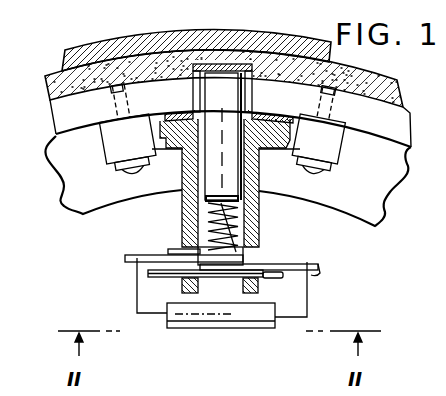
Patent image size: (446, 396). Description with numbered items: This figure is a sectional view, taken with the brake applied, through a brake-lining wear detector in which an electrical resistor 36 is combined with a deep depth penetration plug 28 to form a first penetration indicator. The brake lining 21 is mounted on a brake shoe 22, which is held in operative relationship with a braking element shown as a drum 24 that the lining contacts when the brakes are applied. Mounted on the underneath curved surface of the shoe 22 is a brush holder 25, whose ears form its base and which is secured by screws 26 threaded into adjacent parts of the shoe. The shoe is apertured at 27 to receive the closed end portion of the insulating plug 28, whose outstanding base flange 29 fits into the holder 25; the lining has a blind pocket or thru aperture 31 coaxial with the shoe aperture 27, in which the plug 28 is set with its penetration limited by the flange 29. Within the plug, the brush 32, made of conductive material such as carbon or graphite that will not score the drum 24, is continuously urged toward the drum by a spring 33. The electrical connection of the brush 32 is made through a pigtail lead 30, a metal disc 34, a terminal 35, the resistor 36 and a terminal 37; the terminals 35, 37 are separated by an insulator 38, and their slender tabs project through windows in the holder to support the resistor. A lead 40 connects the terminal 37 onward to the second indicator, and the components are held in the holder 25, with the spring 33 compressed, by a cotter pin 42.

The brake lining 21 is at (50, 97).
The brake shoe 22 is at (72, 114).
The drum 24 is at (66, 50).
The brush holder 25 is at (342, 128).
The screws 26 is at (140, 168).
The shoe aperture 27 is at (252, 102).
The deep depth penetration plug 28 is at (195, 63).
The base flange 29 is at (183, 111).
The pigtail lead 30 is at (197, 219).
The blind pocket or thru aperture 31 is at (286, 40).
The brush 32 is at (252, 206).
The spring 33 is at (258, 238).
The metal disc 34 is at (183, 250).
The terminal 35 is at (127, 258).
The electrical resistor 36 is at (243, 328).
The terminal 37 is at (321, 274).
The insulator 38 is at (157, 264).
The lead 40 is at (320, 282).
The cotter pin 42 is at (158, 277).